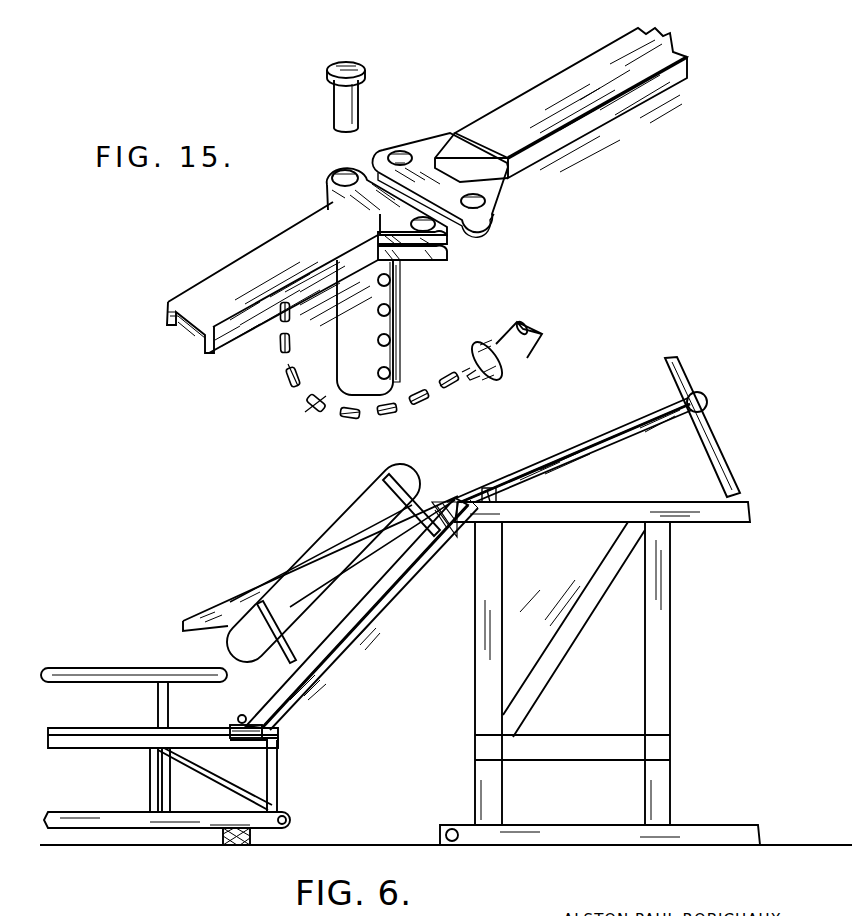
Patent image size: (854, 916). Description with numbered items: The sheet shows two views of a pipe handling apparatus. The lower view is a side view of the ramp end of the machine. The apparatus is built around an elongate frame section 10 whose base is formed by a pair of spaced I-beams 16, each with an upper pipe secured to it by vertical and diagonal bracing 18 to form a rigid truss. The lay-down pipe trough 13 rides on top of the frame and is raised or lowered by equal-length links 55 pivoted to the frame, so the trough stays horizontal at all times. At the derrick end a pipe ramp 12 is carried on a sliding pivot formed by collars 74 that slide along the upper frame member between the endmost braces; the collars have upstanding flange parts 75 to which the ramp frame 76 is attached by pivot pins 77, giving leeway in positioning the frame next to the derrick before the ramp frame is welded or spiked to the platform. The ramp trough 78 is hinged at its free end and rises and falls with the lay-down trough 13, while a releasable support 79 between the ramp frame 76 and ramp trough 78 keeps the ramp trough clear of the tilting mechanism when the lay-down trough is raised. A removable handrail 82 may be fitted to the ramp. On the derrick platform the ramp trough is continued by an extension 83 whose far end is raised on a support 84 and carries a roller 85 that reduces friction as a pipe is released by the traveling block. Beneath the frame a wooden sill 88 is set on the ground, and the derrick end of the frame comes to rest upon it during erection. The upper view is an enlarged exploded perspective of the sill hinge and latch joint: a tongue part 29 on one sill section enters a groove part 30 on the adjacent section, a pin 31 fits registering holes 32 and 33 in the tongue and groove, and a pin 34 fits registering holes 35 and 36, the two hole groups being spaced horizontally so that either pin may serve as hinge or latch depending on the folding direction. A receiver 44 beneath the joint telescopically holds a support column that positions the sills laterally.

In FIG. 6, the elongate frame section 10 is at (118, 839).
In FIG. 6, the pipe ramp 12 is at (346, 653).
In FIG. 6, the lay-down pipe trough 13 is at (96, 664).
In FIG. 6, the I-beams 16 is at (98, 797).
In FIG. 6, the vertical and diagonal bracing 18 is at (207, 779).
In FIG. 15, the tongue part 29 is at (498, 197).
In FIG. 15, the groove part 30 is at (440, 259).
In FIG. 15, the pin 31 is at (525, 357).
In FIG. 15, the hole 32 is at (484, 217).
In FIG. 15, the hole 33 is at (447, 240).
In FIG. 15, the pin 34 is at (345, 108).
In FIG. 15, the hole 35 is at (400, 151).
In FIG. 15, the hole 36 is at (331, 180).
In FIG. 15, the receivers 44 is at (394, 331).
In FIG. 6, the links 55 is at (158, 708).
In FIG. 6, the collars 74 is at (238, 748).
In FIG. 6, the upstanding flange parts 75 is at (235, 725).
In FIG. 6, the ramp frame 76 is at (366, 609).
In FIG. 6, the pivot pins 77 is at (244, 715).
In FIG. 6, the ramp trough 78 is at (232, 612).
In FIG. 6, the support 79 is at (290, 641).
In FIG. 6, the removable handrail 82 is at (328, 533).
In FIG. 6, the extension 83 is at (604, 431).
In FIG. 6, the support 84 is at (722, 469).
In FIG. 6, the roller 85 is at (705, 398).
In FIG. 6, the wooden sill 88 is at (250, 843).